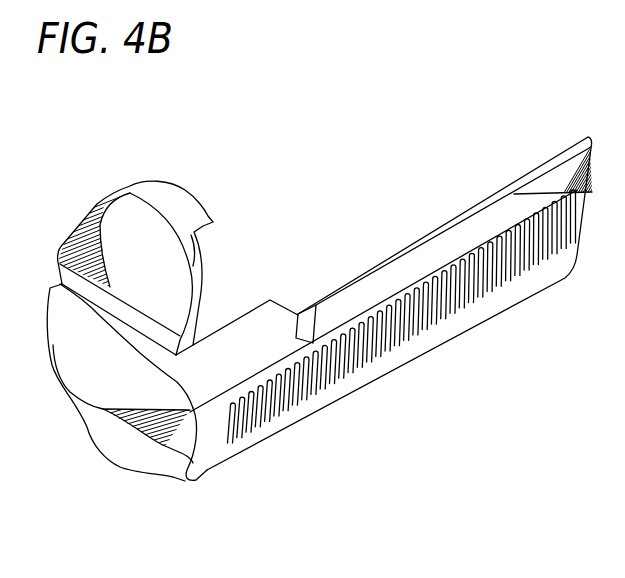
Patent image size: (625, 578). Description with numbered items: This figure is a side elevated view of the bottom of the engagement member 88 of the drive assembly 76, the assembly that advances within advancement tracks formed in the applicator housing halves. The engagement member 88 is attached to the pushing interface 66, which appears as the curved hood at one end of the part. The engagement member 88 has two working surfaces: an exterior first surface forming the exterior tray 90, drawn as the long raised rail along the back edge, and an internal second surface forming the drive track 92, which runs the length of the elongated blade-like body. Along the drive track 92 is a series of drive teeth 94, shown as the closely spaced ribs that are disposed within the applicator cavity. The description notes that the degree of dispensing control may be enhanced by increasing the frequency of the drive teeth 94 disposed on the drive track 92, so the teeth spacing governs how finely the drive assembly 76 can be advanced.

The pushing interface 66 is at (212, 189).
The drive assembly 76 is at (288, 160).
The engagement member 88 is at (442, 184).
The exterior tray 90 is at (355, 251).
The drive track 92 is at (248, 476).
The drive teeth 94 is at (333, 400).